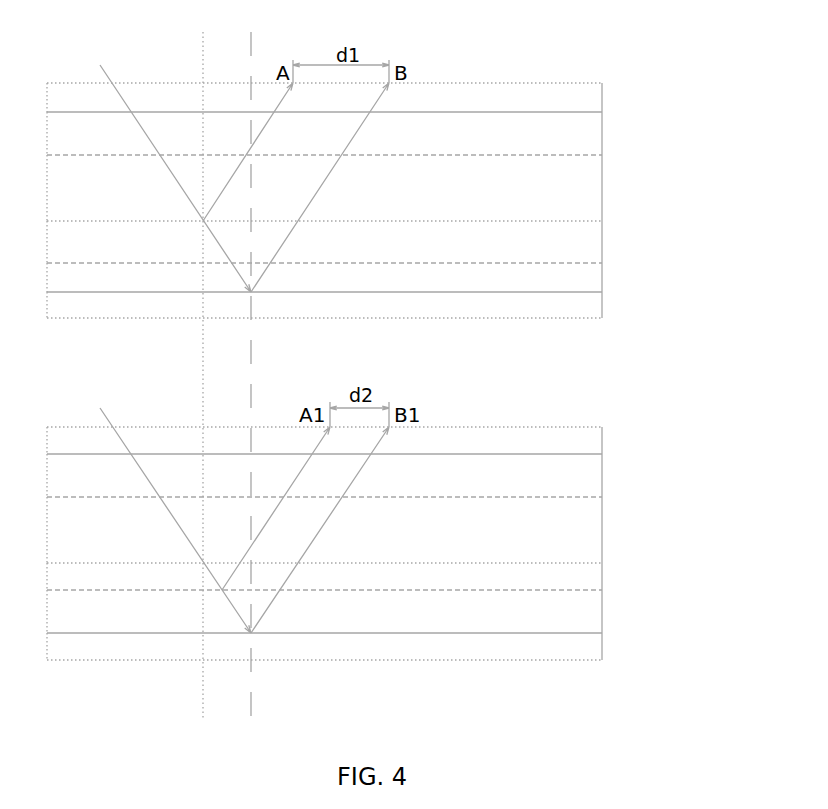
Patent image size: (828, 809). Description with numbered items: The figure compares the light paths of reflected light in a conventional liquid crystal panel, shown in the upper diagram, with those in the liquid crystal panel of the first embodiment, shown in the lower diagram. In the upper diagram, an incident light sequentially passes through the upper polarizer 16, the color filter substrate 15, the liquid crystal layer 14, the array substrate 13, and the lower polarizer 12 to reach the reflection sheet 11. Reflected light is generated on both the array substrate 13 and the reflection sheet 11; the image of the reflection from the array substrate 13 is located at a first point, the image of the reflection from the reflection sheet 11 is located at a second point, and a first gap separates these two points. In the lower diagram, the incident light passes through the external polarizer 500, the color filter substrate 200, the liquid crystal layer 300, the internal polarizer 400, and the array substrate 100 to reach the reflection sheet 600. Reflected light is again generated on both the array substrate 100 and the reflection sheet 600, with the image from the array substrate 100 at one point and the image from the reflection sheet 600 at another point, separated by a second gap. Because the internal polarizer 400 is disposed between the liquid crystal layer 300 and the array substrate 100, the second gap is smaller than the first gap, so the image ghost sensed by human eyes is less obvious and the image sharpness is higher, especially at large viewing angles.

The upper polarizer 16 is at (592, 97).
The color filter substrate 15 is at (592, 133).
The liquid crystal layer 14 is at (592, 187).
The array substrate 13 is at (592, 242).
The lower polarizer 12 is at (592, 276).
The reflection sheet 11 is at (592, 308).
The external polarizer 500 is at (592, 437).
The color filter substrate 200 is at (592, 475).
The liquid crystal layer 300 is at (592, 528).
The internal polarizer 400 is at (592, 573).
The array substrate 100 is at (592, 610).
The reflection sheet 600 is at (592, 648).